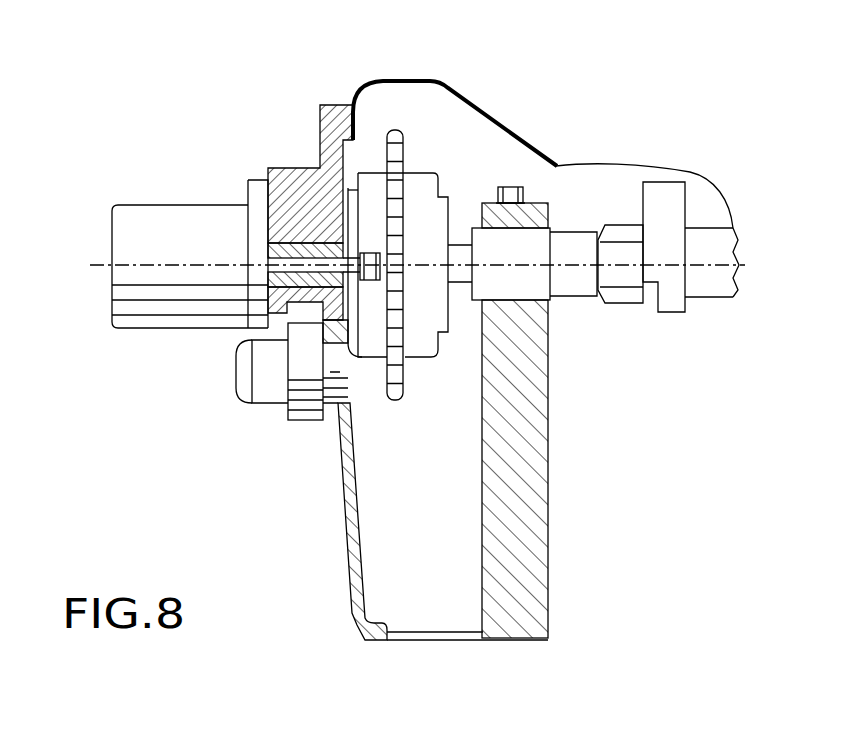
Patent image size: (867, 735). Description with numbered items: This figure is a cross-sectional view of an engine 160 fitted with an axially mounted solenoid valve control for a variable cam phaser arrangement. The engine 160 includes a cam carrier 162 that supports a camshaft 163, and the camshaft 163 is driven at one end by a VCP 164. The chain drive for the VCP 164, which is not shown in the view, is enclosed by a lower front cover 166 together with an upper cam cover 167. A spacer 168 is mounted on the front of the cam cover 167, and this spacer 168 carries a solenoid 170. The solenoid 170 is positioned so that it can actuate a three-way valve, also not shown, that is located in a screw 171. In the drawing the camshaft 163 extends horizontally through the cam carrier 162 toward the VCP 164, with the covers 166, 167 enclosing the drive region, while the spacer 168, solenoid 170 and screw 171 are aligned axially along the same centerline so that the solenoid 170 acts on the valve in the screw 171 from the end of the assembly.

The engine 160 is at (575, 145).
The cam carrier 162 is at (520, 465).
The camshaft 163 is at (577, 297).
The VCP 164 is at (450, 163).
The lower front cover 166 is at (340, 478).
The upper cam cover 167 is at (393, 83).
The spacer 168 is at (307, 192).
The solenoid 170 is at (205, 330).
The screw 171 is at (377, 287).